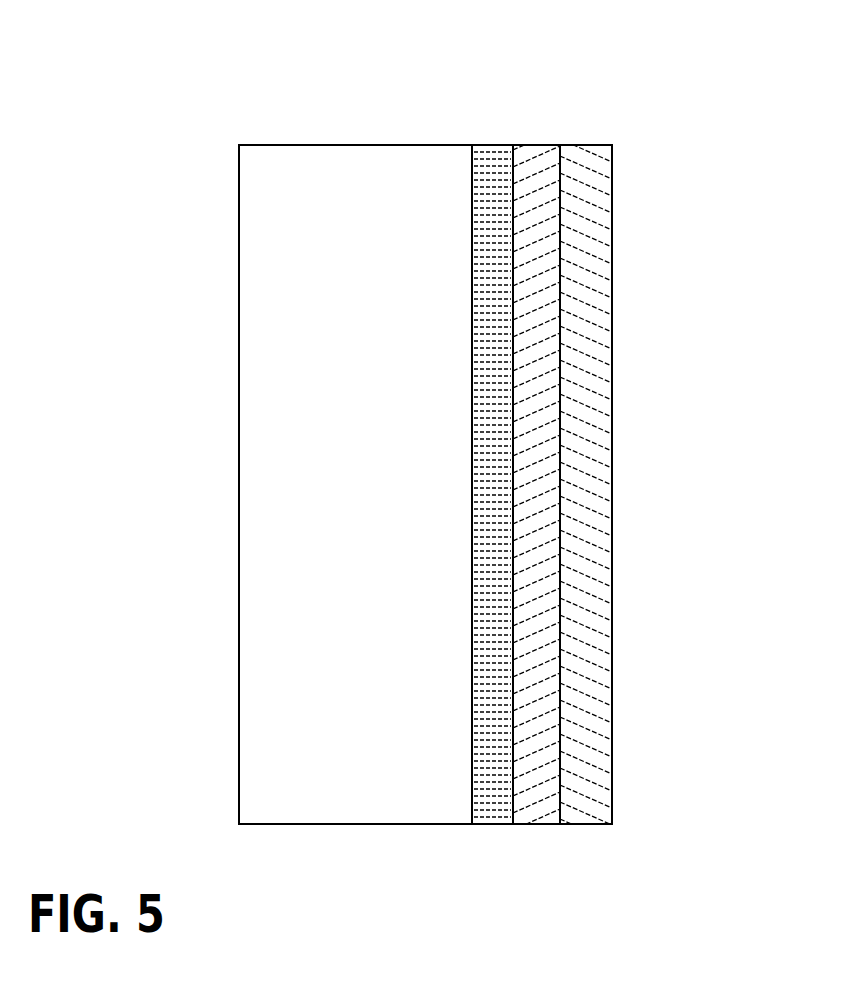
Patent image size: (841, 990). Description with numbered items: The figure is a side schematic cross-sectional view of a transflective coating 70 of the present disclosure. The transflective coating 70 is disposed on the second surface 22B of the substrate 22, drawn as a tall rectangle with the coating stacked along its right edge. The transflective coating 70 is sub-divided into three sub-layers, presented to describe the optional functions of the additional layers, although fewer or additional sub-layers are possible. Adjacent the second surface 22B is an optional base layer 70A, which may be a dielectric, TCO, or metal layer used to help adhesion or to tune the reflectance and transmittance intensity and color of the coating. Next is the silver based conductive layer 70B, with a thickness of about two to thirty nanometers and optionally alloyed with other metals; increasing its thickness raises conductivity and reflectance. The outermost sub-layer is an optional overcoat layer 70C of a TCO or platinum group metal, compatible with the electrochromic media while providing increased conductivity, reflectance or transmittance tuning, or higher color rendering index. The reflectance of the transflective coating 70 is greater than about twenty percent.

The substrate 22 is at (317, 180).
The second surface of the substrate 22B is at (470, 186).
The transflective coating 70 is at (608, 127).
The base layer 70A is at (487, 238).
The silver based conductive layer 70B is at (533, 337).
The overcoat layer 70C is at (588, 443).